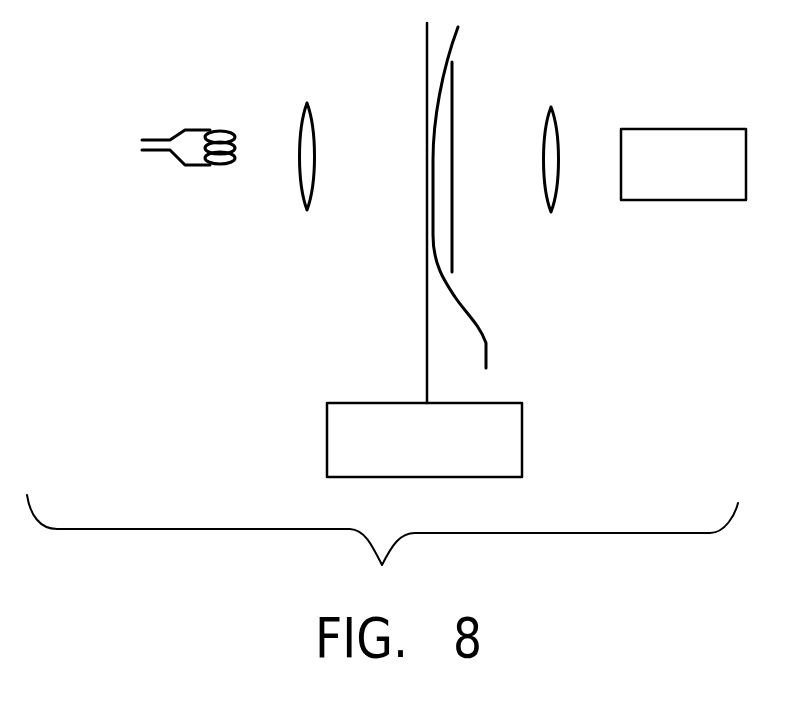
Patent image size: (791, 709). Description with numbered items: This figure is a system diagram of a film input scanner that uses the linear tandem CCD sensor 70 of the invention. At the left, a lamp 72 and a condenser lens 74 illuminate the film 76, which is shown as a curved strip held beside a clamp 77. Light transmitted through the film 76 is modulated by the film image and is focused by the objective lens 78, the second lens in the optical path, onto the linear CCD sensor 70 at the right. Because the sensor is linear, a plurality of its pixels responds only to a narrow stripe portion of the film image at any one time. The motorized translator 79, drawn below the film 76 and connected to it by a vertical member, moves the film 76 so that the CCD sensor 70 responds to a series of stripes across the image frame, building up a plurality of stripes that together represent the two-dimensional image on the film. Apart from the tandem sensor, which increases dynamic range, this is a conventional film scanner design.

The CCD sensor 70 is at (683, 129).
The lamp 72 is at (155, 140).
The condenser lens 74 is at (312, 113).
The film 76 is at (487, 352).
The clamp 77 is at (454, 247).
The objective lens 78 is at (547, 120).
The motorized translator 79 is at (522, 440).